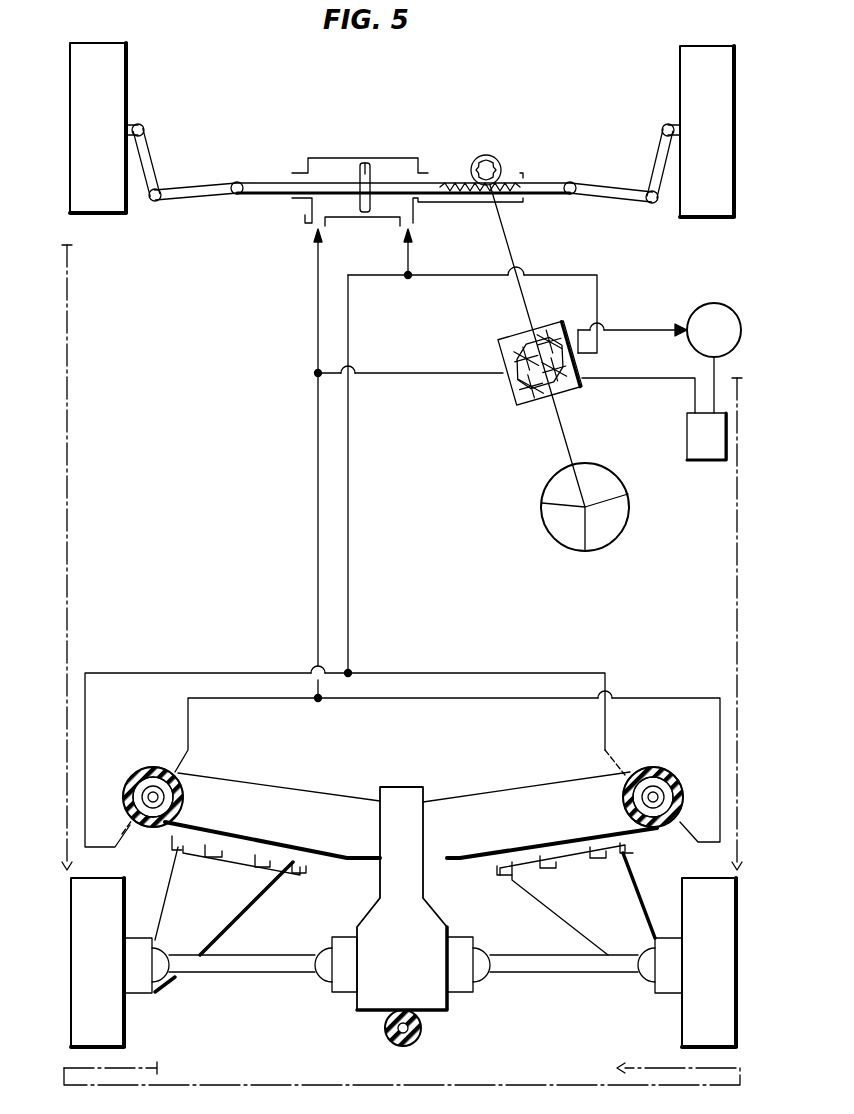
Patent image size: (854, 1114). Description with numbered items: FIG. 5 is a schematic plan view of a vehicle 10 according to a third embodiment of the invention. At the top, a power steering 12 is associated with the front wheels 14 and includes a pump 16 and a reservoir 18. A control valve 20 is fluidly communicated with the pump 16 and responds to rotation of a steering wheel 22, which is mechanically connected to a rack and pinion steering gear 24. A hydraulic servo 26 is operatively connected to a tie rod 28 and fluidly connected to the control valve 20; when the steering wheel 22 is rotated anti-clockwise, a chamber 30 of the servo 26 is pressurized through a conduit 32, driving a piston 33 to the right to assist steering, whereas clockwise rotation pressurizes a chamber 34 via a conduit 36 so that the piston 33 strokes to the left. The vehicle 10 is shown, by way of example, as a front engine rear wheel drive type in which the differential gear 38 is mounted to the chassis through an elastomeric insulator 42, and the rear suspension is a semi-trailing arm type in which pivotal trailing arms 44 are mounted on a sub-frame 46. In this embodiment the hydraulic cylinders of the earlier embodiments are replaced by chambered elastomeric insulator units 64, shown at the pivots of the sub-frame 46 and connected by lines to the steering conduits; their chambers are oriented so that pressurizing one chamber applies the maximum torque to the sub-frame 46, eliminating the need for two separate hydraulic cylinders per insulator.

The vehicle 10 is at (67, 430).
The power steering 12 is at (312, 135).
The front wheels 14 is at (107, 80).
The pump 16 is at (700, 310).
The reservoir 18 is at (687, 441).
The control valve 20 is at (512, 398).
The steering wheel 22 is at (545, 522).
The rack and pinion steering gear 24 is at (467, 160).
The hydraulic servo 26 is at (352, 218).
The tie rod 28 is at (262, 180).
The chamber 30 is at (307, 208).
The conduit 32 is at (318, 322).
The piston 33 is at (365, 163).
The chamber 34 is at (413, 205).
The conduit 36 is at (350, 412).
The differential gear 38 is at (365, 997).
The elastomeric insulator 42 is at (422, 1034).
The trailing arms 44 is at (250, 898).
The sub-frame 46 is at (350, 810).
The chambered elastomeric insulator units 64 is at (147, 770).